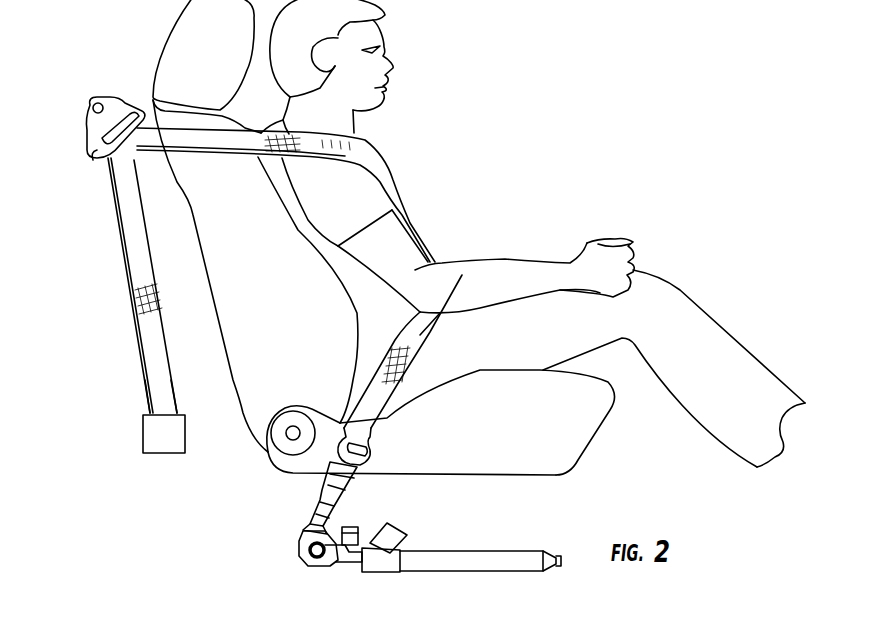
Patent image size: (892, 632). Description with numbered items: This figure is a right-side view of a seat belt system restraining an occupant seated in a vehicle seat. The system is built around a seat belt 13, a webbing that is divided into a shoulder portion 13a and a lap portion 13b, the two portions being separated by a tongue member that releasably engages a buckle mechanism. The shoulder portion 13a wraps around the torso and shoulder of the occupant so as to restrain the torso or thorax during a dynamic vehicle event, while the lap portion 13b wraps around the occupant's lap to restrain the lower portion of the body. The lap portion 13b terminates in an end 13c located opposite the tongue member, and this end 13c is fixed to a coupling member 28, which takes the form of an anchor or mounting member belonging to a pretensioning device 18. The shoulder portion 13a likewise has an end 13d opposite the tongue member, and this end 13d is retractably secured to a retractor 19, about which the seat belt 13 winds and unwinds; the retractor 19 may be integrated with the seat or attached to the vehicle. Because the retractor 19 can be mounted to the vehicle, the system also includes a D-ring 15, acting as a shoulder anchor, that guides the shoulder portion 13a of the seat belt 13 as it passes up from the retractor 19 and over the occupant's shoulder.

The seat belt 13 is at (130, 217).
The shoulder portion 13a is at (372, 163).
The lap portion 13b is at (462, 275).
The end 13c is at (380, 428).
The end 13d is at (160, 403).
The D-ring 15 is at (97, 97).
The pretensioning device 18 is at (290, 506).
The retractor 19 is at (175, 449).
The coupling member 28 is at (362, 460).